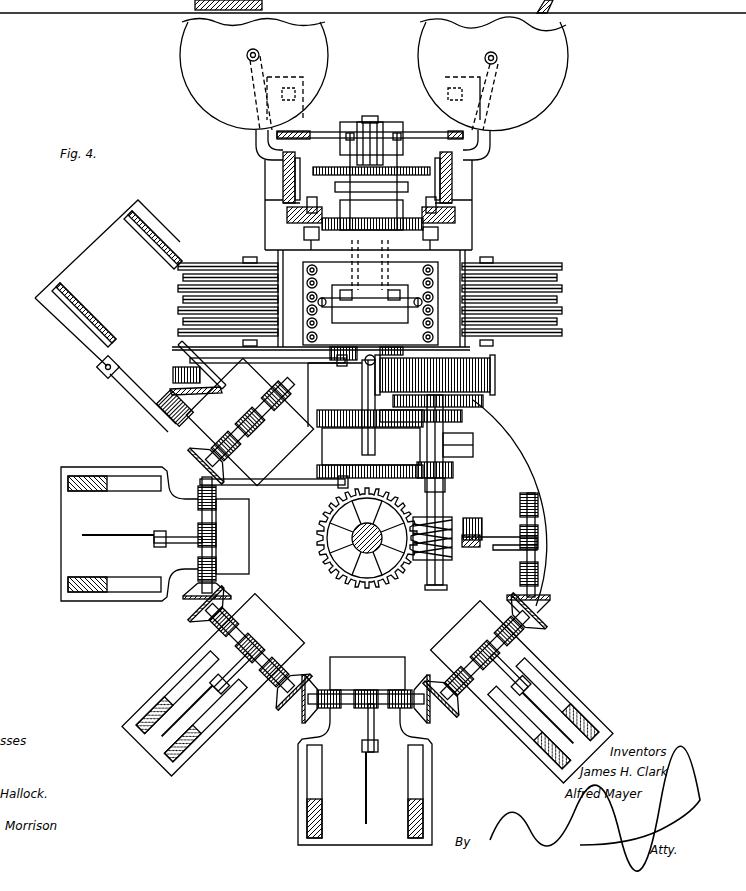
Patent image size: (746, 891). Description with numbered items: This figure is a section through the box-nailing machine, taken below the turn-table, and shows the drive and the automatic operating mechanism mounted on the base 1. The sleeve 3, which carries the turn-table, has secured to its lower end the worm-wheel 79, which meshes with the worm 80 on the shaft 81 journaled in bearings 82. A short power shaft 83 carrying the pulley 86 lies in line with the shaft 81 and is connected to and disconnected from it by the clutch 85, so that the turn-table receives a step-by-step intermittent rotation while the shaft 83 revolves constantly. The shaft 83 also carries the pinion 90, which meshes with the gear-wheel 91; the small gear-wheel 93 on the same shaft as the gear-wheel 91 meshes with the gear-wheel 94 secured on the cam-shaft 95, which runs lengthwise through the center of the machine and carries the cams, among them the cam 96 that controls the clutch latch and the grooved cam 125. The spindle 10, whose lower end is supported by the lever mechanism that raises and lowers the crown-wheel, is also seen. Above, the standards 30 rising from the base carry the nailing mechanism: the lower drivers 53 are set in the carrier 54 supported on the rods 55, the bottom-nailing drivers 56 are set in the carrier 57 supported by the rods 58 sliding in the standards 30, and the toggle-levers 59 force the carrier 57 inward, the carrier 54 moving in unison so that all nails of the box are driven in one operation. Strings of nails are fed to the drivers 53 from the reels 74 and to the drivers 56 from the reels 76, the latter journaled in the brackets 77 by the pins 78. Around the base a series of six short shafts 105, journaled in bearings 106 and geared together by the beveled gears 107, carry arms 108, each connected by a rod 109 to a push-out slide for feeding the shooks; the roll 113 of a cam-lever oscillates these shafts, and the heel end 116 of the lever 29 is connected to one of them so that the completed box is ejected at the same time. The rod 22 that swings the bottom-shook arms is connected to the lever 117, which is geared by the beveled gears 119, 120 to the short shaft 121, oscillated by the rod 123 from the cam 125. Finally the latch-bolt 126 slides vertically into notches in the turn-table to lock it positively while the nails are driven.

The base 1 is at (367, 565).
The sleeve 3 is at (357, 568).
The spindle 10 is at (375, 565).
The rod 22 is at (104, 373).
The lever 29 is at (473, 548).
The standards 30 is at (297, 125).
The lower drivers 53 is at (312, 305).
The carrier 54 is at (370, 303).
The rods 55 is at (417, 297).
The drivers 56 is at (280, 233).
The carrier 57 is at (371, 181).
The rods 58 is at (285, 183).
The toggle-levers 59 is at (382, 117).
The reels 74 is at (215, 273).
The reels 76 is at (226, 113).
The brackets 77 is at (265, 145).
The pins 78 is at (261, 55).
The worm-wheel 79 is at (332, 563).
The worm 80 is at (447, 560).
The shaft 81 is at (447, 493).
The bearings 82 is at (447, 502).
The short shaft 83 is at (470, 447).
The clutch 85 is at (463, 467).
The pulley 86 is at (494, 376).
The pinion 90 is at (458, 413).
The gear-wheel 91 is at (481, 403).
The small gear-wheel 93 is at (455, 423).
The gear-wheel 94 is at (332, 411).
The cam-shaft 95 is at (363, 385).
The cam 96 is at (318, 468).
The short shafts 105 is at (216, 522).
The bearings 106 is at (228, 615).
The beveled gears 107 is at (200, 602).
The arms 108 is at (170, 537).
The rod 109 is at (128, 539).
The roll 113 is at (513, 547).
The heel end 116 is at (493, 535).
The lever 117 is at (138, 403).
The beveled gear 119 is at (190, 408).
The bevel-gear 120 is at (176, 382).
The short shaft 121 is at (182, 345).
The rod 123 is at (274, 364).
The cam 125 is at (355, 350).
The latch-bolt 126 is at (377, 352).